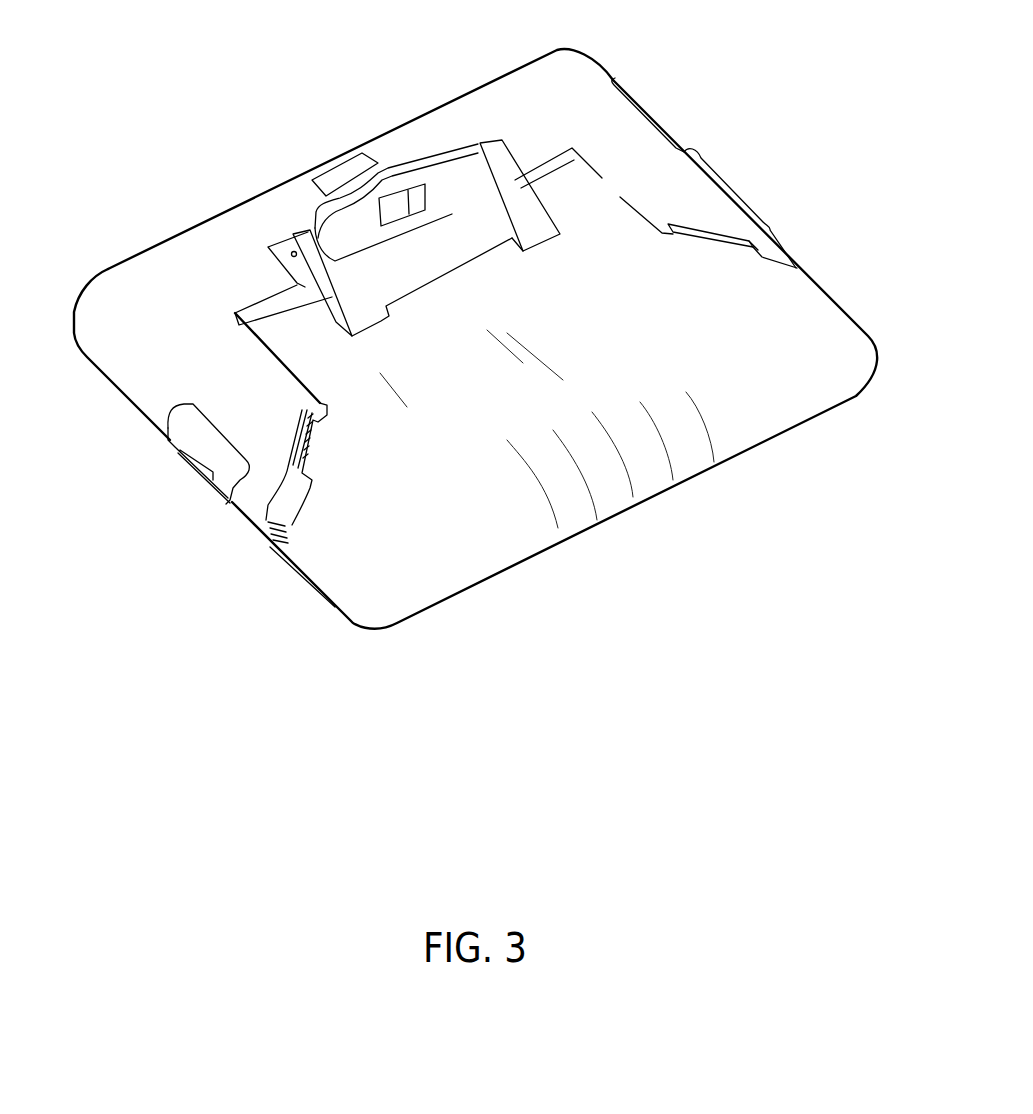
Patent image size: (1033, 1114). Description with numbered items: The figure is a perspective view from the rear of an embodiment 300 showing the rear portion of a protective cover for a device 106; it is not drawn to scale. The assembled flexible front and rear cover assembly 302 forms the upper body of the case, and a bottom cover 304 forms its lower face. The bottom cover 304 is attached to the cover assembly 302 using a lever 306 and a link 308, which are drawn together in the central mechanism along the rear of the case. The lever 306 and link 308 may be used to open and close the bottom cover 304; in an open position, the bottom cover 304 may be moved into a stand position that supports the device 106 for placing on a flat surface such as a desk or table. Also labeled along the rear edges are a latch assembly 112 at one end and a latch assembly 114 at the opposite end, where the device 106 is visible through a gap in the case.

The embodiment 300 is at (470, 454).
The cover assembly 302 is at (337, 244).
The bottom cover 304 is at (554, 378).
The lever 306 is at (470, 168).
The link 308 is at (610, 151).
The latch assembly 112 is at (745, 173).
The latch assembly 114 is at (155, 495).
The device 106 is at (226, 529).